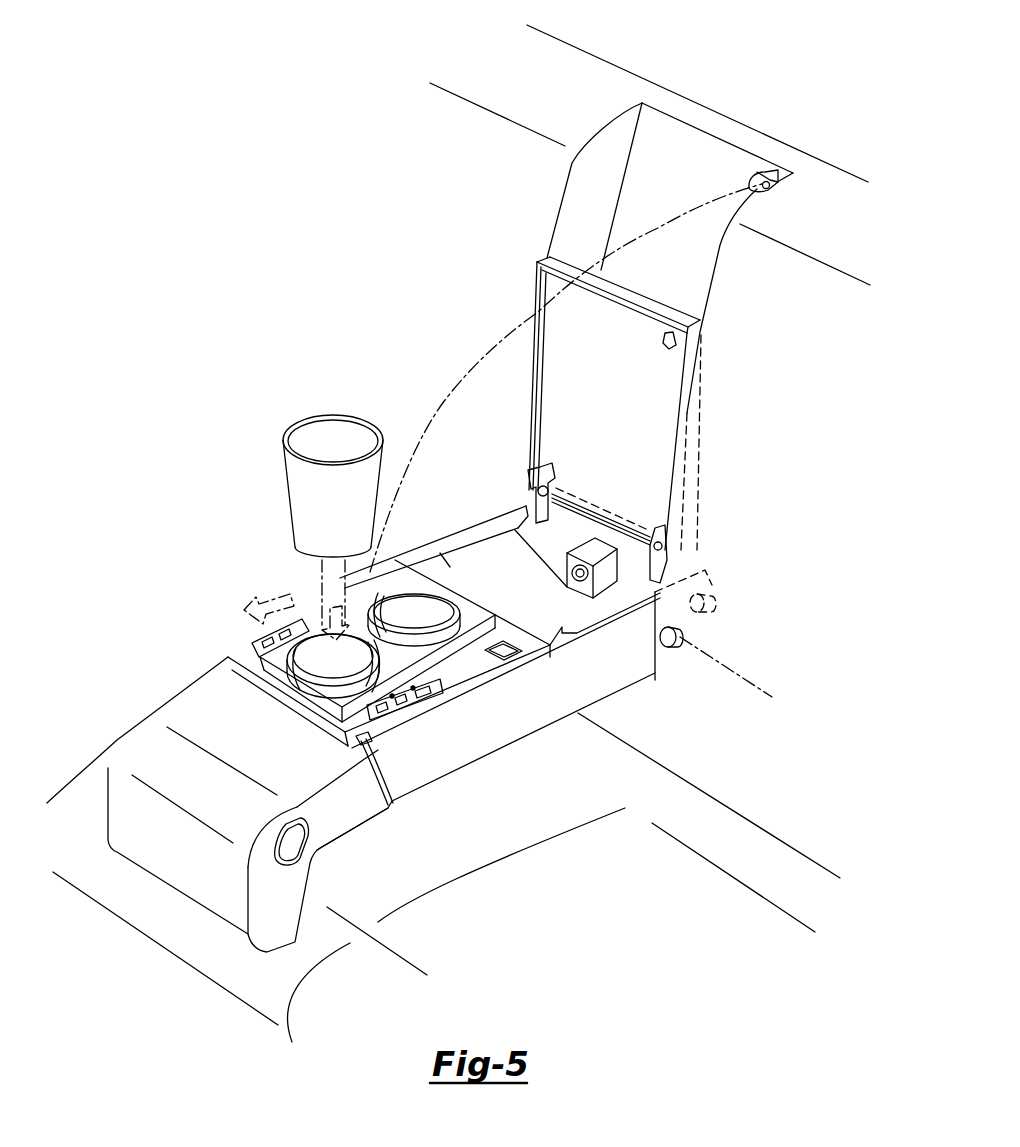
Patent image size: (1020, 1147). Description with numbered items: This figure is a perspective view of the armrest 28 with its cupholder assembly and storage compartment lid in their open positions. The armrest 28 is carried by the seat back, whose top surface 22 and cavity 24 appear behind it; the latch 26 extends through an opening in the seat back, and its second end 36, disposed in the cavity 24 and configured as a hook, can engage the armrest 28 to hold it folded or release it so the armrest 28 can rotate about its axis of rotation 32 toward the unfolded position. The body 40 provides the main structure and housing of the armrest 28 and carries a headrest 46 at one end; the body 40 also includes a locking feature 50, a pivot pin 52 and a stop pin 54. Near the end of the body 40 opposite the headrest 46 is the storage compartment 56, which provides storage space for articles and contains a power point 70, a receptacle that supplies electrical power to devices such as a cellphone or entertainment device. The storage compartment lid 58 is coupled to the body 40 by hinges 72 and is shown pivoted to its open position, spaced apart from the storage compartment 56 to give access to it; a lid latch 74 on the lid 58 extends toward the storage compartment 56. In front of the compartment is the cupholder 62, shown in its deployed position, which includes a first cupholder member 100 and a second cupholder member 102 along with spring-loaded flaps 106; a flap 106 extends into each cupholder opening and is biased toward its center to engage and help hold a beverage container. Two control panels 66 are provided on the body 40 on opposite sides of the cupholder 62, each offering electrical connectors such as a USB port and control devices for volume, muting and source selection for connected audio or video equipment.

The top surface 22 is at (560, 53).
The cavity 24 is at (689, 178).
The latch 26 is at (757, 168).
The armrest 28 is at (178, 669).
The axis of rotation 32 is at (729, 668).
The second end 36 is at (756, 189).
The body 40 is at (540, 723).
The headrest 46 is at (210, 795).
The locking feature 50 is at (353, 743).
The pivot pin 52 is at (670, 640).
The stop pin 54 is at (708, 602).
The storage compartment 56 is at (500, 535).
The storage compartment lid 58 is at (630, 400).
The cupholder 62 is at (300, 695).
The control panel 66 is at (307, 615).
The power point 70 is at (580, 562).
The hinge 72 is at (658, 536).
The lid latch 74 is at (664, 343).
The first cupholder member 100 is at (407, 558).
The second cupholder member 102 is at (473, 618).
The flap 106 is at (298, 668).